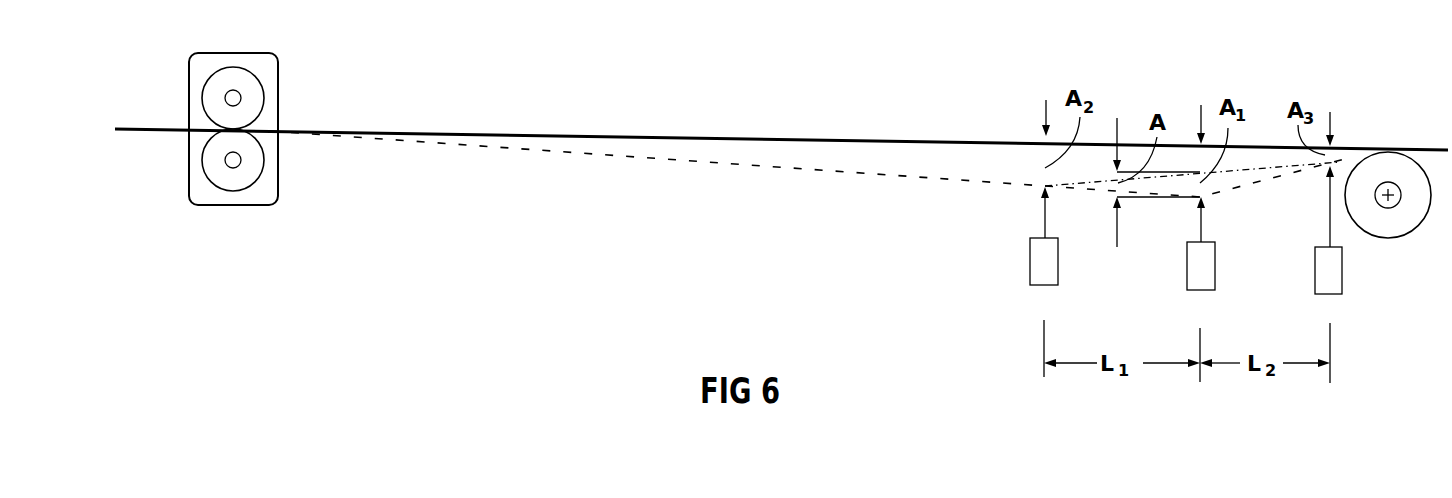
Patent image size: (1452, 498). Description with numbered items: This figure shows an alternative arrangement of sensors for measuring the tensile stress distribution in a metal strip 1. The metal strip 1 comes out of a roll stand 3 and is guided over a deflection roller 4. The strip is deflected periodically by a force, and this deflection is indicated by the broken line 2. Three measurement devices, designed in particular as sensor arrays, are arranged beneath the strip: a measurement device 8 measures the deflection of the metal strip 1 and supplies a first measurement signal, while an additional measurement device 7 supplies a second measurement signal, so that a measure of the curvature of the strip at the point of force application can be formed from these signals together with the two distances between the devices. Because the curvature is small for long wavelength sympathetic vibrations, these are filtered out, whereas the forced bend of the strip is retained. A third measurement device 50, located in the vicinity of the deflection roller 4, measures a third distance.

The metal strip 1 is at (655, 132).
The broken line 2 is at (688, 160).
The roll stand 3 is at (278, 110).
The deflection roller 4 is at (1407, 230).
The additional measurement device 7 is at (1030, 267).
The measurement device 8 is at (1187, 267).
The third measurement device 50 is at (1342, 270).